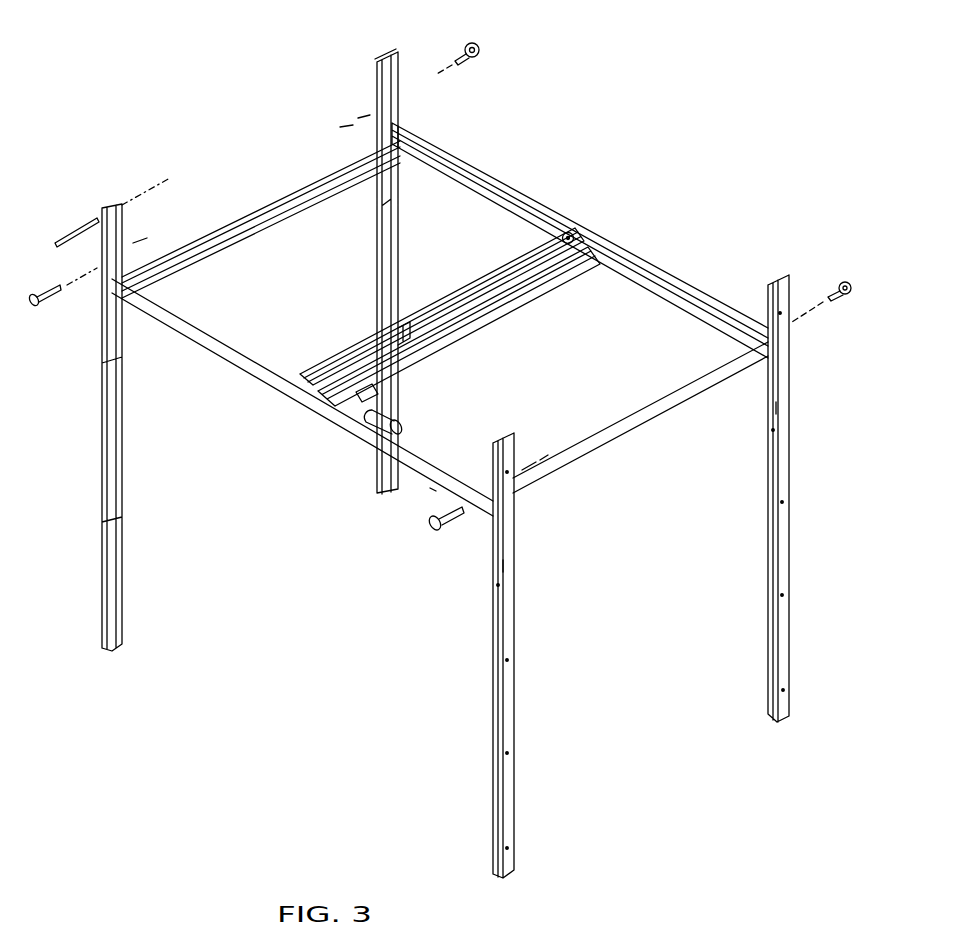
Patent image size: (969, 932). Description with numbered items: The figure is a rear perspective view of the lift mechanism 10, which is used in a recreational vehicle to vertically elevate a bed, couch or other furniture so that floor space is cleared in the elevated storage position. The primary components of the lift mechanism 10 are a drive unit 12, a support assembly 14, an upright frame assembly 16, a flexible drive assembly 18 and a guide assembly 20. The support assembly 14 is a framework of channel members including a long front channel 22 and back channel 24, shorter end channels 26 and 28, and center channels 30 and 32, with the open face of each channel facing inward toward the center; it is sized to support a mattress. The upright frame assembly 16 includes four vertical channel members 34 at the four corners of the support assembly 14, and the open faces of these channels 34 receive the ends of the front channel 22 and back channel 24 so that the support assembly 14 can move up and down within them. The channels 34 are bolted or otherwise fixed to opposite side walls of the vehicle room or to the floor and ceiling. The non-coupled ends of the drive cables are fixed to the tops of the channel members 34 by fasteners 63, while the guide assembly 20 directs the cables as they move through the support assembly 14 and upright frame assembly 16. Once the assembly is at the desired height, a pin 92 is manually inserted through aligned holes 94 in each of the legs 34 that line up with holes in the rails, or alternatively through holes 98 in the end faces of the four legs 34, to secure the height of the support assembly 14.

The lift mechanism 10 is at (486, 110).
The drive unit 12 is at (402, 409).
The support assembly 14 is at (432, 487).
The upright frame assembly 16 is at (402, 94).
The flexible drive assembly 18 is at (408, 312).
The guide assembly 20 is at (573, 233).
The front channel 22 is at (683, 283).
The back channel 24 is at (322, 413).
The end channel 26 is at (628, 430).
The end channel 28 is at (287, 227).
The center channel 30 is at (513, 307).
The center channel 32 is at (492, 265).
The vertical channel member 34 is at (445, 452).
The fastener 63 is at (68, 232).
The pin 92 is at (50, 306).
The hole 94 is at (378, 103).
The hole 98 is at (506, 565).